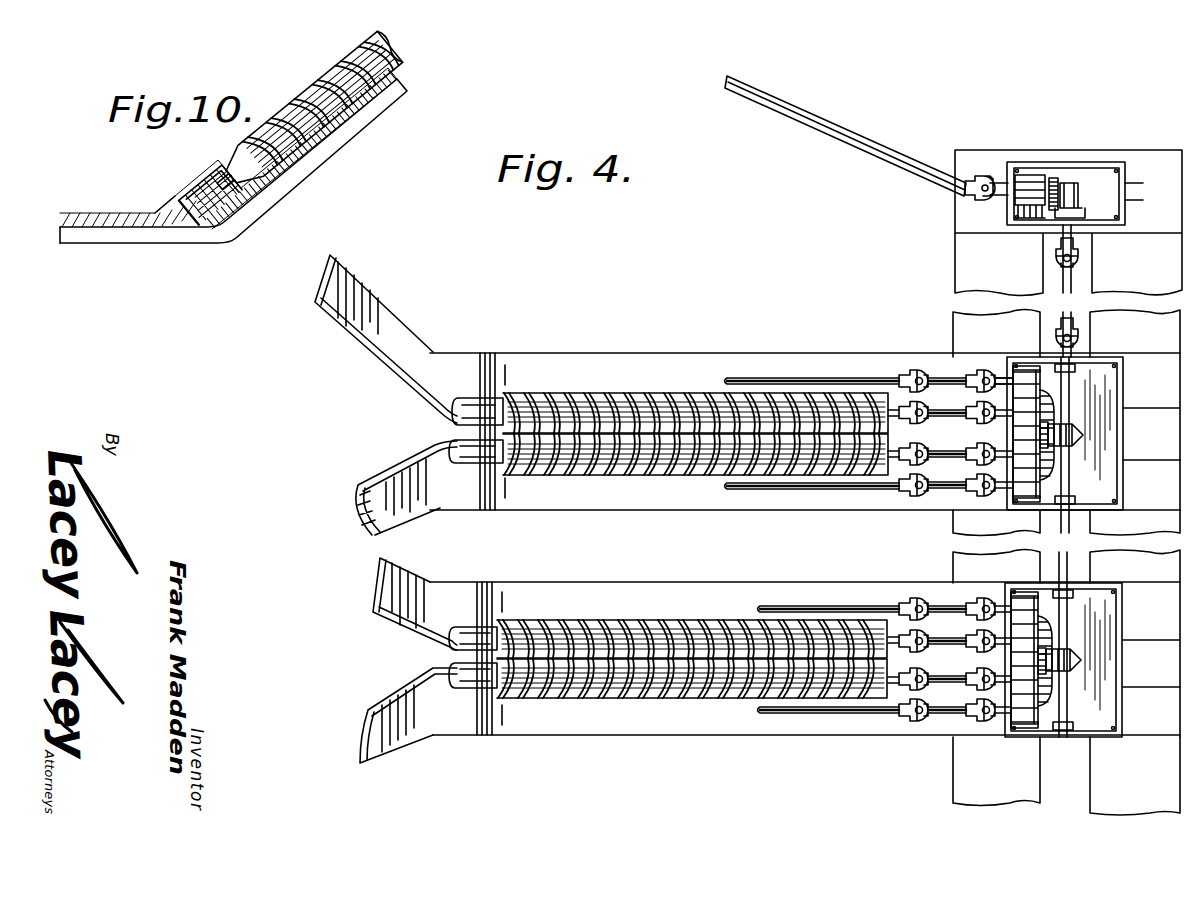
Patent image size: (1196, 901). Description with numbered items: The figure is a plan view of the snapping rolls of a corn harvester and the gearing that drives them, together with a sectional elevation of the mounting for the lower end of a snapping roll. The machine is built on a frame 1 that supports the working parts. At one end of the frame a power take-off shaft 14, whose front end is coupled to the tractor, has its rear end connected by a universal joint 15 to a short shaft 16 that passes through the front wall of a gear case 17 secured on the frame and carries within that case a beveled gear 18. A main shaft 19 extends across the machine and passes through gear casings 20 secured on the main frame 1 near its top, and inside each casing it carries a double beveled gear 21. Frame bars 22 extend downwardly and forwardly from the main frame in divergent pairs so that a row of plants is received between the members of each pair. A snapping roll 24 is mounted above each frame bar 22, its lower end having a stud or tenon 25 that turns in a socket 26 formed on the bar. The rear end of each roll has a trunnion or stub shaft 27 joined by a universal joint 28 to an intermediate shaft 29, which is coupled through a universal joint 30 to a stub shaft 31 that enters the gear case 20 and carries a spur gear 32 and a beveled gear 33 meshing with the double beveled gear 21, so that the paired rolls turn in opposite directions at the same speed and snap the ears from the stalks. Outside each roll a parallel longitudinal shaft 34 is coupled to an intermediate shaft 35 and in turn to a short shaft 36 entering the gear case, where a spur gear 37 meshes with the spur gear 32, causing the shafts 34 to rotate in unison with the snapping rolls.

In FIG. 4, the frame 1 is at (1043, 482).
In FIG. 4, the power take-off shaft 14 is at (845, 136).
In FIG. 4, the universal joint 15 is at (952, 208).
In FIG. 4, the short shaft 16 is at (1038, 169).
In FIG. 4, the gear case 17 is at (1091, 168).
In FIG. 4, the beveled gear 18 is at (1075, 155).
In FIG. 4, the main shaft 19 is at (1096, 291).
In FIG. 4, the gear casing 20 is at (1076, 530).
In FIG. 4, the double beveled gear 21 is at (1106, 547).
In FIG. 10, the frame bar 22 is at (233, 161).
In FIG. 4, the frame bar 22 is at (747, 514).
In FIG. 10, the snapping roll 24 is at (312, 110).
In FIG. 4, the snapping roll 24 is at (692, 548).
In FIG. 10, the stud or tenon 25 is at (203, 189).
In FIG. 10, the socket 26 is at (154, 194).
In FIG. 4, the socket 26 is at (442, 543).
In FIG. 4, the trunnion or stub shaft 27 is at (863, 546).
In FIG. 4, the universal joint 28 is at (888, 578).
In FIG. 4, the intermediate shaft 29 is at (934, 587).
In FIG. 4, the universal joint 30 is at (975, 582).
In FIG. 4, the stub shaft 31 is at (1010, 583).
In FIG. 4, the spur gear 32 is at (1045, 581).
In FIG. 4, the beveled gear 33 is at (1076, 575).
In FIG. 4, the longitudinal shaft 34 is at (812, 579).
In FIG. 4, the intermediate shaft 35 is at (993, 547).
In FIG. 4, the short shaft 36 is at (990, 492).
In FIG. 4, the spur gear 37 is at (1040, 594).